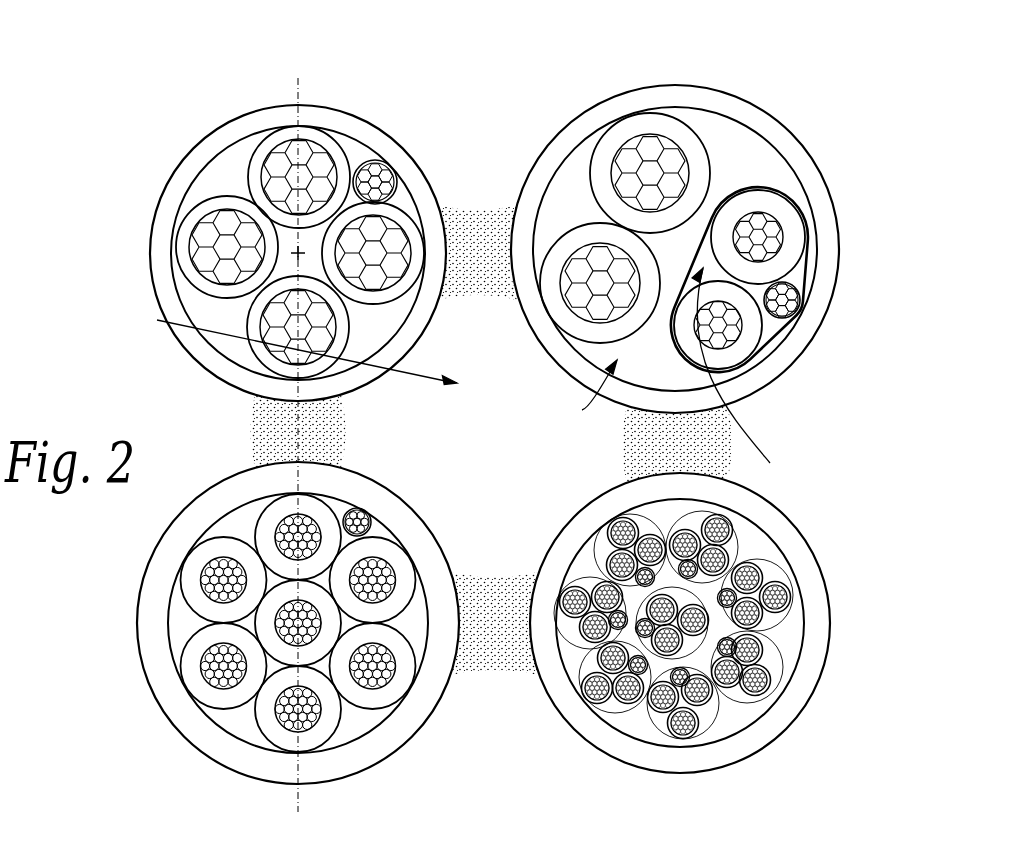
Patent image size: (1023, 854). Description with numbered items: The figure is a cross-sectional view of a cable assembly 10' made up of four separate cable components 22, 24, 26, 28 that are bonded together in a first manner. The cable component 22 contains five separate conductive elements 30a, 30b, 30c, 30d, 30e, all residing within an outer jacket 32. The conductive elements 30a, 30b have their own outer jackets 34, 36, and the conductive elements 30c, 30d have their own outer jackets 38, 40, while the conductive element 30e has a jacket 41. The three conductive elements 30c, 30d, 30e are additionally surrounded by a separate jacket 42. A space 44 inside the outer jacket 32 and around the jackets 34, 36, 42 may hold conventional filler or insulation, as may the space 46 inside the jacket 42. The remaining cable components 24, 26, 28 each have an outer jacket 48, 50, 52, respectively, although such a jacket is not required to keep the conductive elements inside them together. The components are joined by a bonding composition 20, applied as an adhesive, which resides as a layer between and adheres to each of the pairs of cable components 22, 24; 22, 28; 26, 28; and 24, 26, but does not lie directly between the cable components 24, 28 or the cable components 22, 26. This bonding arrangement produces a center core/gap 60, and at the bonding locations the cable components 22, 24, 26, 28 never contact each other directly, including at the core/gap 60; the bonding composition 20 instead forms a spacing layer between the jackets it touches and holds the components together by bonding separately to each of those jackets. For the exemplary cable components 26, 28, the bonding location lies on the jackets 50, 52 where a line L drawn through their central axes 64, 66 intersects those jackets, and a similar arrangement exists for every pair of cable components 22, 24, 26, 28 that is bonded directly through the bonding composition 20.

The cable assembly 10' is at (514, 429).
The bonding composition 20 is at (487, 282).
The cable component 22 is at (729, 279).
The cable component 24 is at (707, 622).
The cable component 26 is at (276, 615).
The cable component 28 is at (267, 249).
The conductive element 30a is at (689, 153).
The conductive element 30b is at (586, 242).
The conductive element 30c is at (818, 237).
The conductive element 30d is at (770, 360).
The conductive element 30e is at (796, 298).
The outer jacket 32 is at (823, 328).
The outer jacket 34 is at (700, 168).
The outer jacket 36 is at (637, 320).
The outer jacket 38 is at (795, 248).
The outer jacket 40 is at (735, 358).
The jacket 41 is at (807, 262).
The separate jacket 42 is at (815, 263).
The space 44 is at (582, 410).
The space 46 is at (744, 376).
The outer jacket 48 is at (797, 688).
The outer jacket 50 is at (420, 715).
The outer jacket 52 is at (197, 360).
The center core/gap 60 is at (157, 320).
The central axis 64 is at (290, 625).
The central axis 66 is at (298, 247).
The line L is at (297, 797).